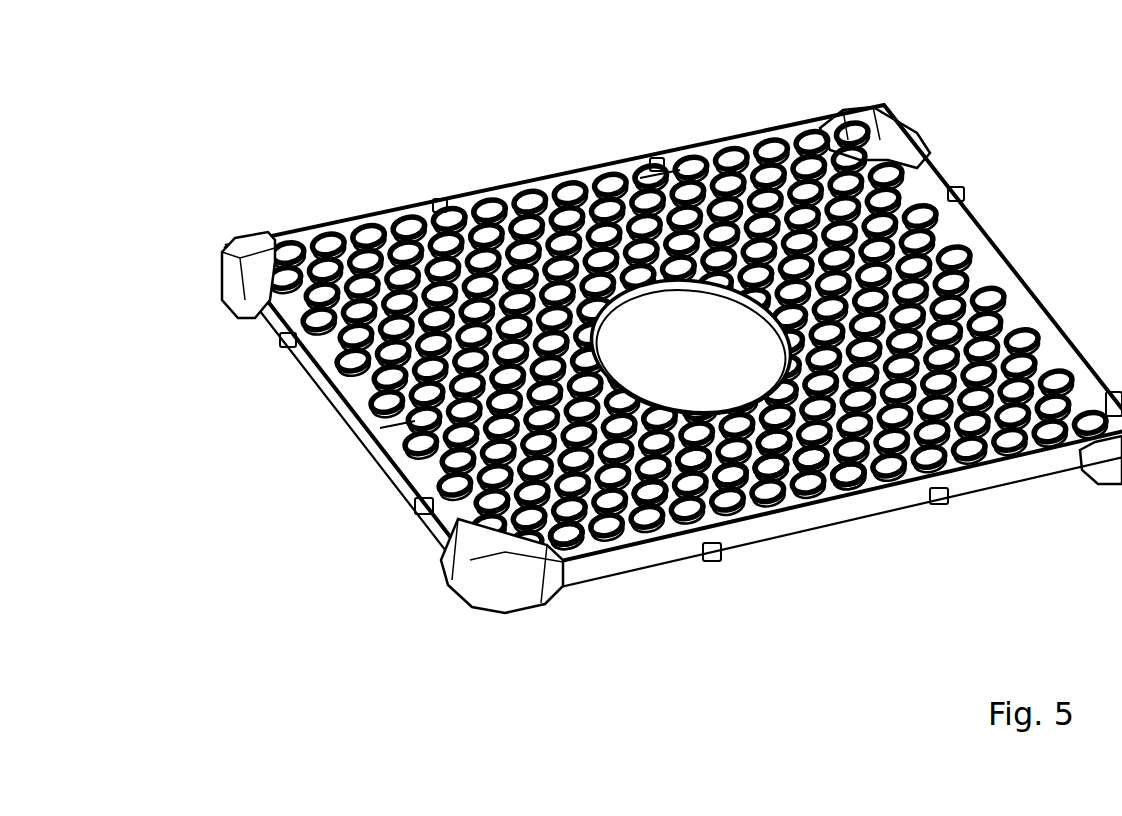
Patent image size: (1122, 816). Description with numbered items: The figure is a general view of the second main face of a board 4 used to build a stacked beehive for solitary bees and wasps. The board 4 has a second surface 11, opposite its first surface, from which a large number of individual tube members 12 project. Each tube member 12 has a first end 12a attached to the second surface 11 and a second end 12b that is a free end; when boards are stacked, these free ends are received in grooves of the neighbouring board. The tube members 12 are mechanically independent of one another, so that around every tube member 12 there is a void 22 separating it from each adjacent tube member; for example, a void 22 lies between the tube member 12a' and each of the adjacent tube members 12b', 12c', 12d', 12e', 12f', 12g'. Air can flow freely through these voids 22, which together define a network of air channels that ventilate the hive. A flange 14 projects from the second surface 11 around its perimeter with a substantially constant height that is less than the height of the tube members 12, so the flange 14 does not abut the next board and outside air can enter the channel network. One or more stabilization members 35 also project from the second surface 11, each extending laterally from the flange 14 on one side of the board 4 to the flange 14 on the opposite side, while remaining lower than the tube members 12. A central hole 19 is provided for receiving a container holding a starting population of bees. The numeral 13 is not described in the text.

The board 4 is at (990, 245).
The second surface 11 is at (268, 292).
The tube member 12 is at (595, 183).
The first end 12a is at (443, 600).
The second end 12b is at (600, 619).
The tube member 12a' is at (813, 539).
The tube member 12b' is at (774, 560).
The tube member 12c' is at (727, 533).
The tube member 12d' is at (690, 565).
The tube member 12e' is at (815, 506).
The tube member 12f' is at (920, 553).
The tube member 12g' is at (859, 525).
The lower rim 13 is at (400, 477).
The flange 14 is at (313, 377).
The hole 19 is at (705, 376).
The void 22 is at (660, 172).
The stabilization member 35 is at (493, 210).